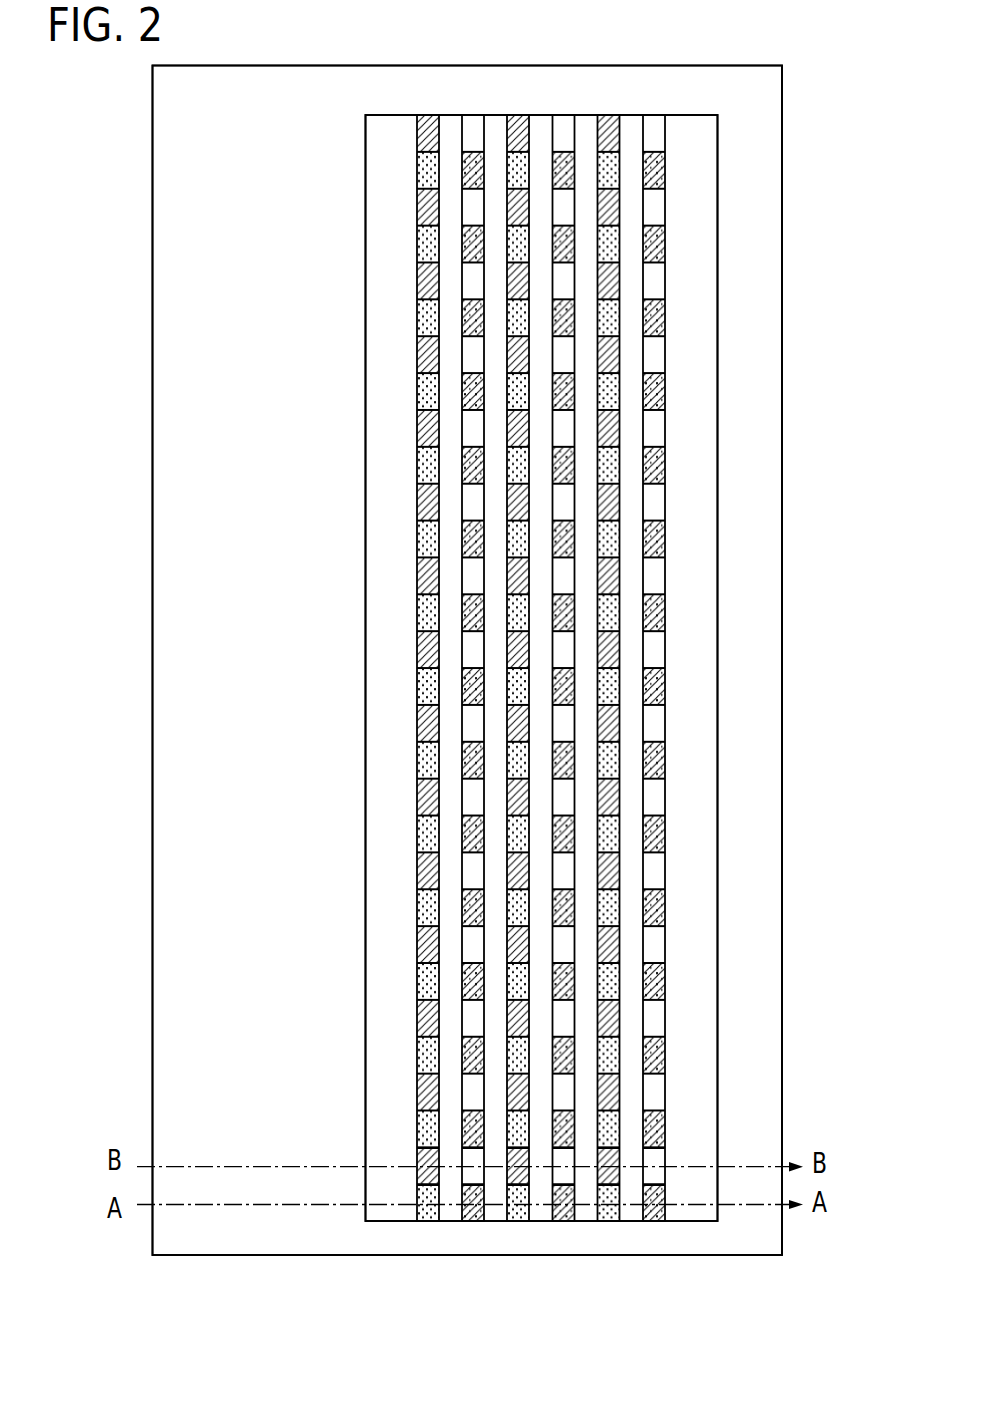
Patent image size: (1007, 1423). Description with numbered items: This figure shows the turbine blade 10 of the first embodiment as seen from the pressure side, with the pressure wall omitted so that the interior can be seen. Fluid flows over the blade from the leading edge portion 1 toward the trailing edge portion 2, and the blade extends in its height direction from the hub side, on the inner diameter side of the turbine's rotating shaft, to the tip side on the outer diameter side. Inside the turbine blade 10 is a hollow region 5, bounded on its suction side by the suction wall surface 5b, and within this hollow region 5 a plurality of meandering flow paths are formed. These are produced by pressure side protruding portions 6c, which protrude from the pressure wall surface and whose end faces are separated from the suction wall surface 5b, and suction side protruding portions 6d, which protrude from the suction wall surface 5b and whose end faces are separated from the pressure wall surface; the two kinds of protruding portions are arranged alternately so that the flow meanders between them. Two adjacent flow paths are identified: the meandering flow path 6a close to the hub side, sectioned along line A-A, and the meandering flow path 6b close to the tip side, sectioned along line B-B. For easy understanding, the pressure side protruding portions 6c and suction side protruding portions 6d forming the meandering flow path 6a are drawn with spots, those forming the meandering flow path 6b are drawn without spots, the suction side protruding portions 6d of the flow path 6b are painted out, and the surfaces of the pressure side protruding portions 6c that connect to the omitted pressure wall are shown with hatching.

The turbine blade 10 is at (800, 168).
The leading edge portion 1 is at (152, 461).
The trailing edge portion 2 is at (783, 395).
The hollow region 5 is at (388, 941).
The suction wall surface 5b is at (387, 1073).
The meandering flow path 6a is at (672, 1187).
The meandering flow path 6b is at (672, 1183).
The pressure side protruding portions 6c is at (468, 1175).
The suction side protruding portions 6d is at (427, 1217).